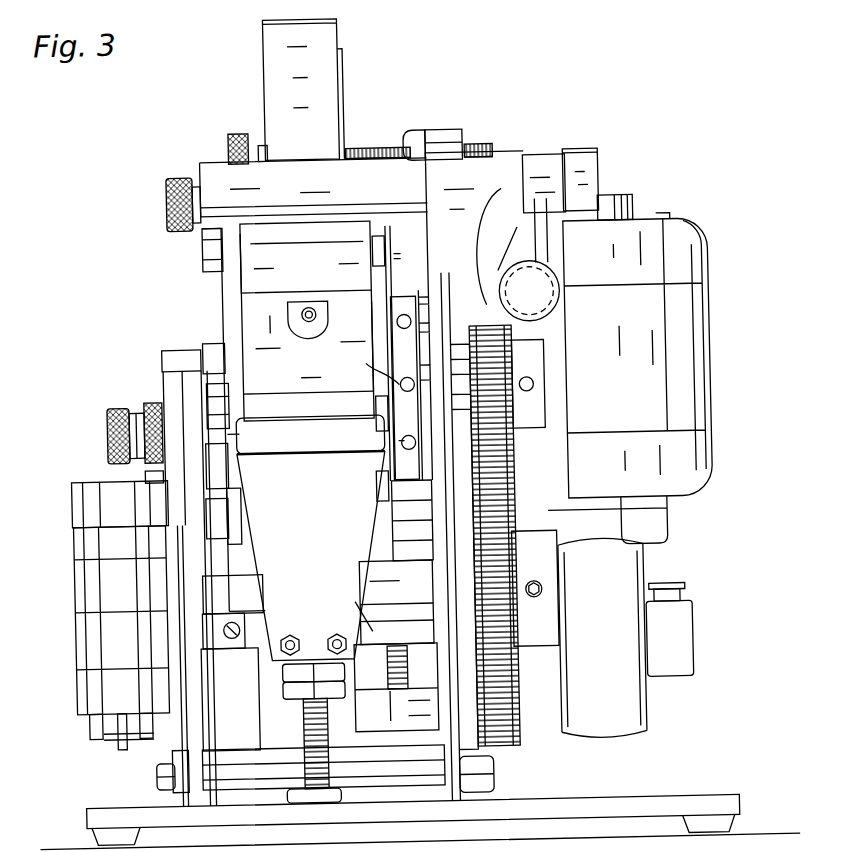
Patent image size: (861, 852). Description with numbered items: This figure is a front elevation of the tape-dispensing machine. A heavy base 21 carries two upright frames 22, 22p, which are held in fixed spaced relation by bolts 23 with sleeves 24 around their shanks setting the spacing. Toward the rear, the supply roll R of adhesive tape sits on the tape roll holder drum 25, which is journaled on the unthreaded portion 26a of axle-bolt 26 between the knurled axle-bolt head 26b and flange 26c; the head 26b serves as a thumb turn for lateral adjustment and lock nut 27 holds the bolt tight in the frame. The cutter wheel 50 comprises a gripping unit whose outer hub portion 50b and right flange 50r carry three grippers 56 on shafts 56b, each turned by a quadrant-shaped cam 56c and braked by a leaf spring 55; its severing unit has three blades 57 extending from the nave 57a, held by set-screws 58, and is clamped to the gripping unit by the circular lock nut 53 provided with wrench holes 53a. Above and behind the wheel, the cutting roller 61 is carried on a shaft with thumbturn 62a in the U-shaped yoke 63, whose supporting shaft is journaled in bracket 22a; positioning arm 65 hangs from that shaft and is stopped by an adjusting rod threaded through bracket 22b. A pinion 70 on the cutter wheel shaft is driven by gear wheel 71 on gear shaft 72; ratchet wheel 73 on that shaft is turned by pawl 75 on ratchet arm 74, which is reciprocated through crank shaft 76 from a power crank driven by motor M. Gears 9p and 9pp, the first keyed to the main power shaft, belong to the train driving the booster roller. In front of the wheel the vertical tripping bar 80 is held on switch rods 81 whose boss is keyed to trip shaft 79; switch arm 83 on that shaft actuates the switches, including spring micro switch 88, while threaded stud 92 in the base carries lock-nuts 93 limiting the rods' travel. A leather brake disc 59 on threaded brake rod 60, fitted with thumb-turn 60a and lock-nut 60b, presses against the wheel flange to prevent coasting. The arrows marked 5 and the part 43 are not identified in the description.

The supply roll R is at (273, 38).
The tape roll holder drum 25 is at (354, 62).
The section line 5 is at (337, 112).
The unthreaded portion of axle-bolt 26a is at (268, 156).
The flange 26c is at (360, 143).
The lock nut 27 is at (435, 130).
The axle-bolt 26 is at (488, 146).
The bracket 22a is at (587, 156).
The U-shaped yoke 63 is at (228, 167).
The cutting roller 61 is at (281, 213).
The thumbturn 62a is at (172, 198).
The axle-bolt head 26b is at (240, 130).
The cutter wheel 50 is at (225, 319).
The outer or sleeve portion of the hub 50b is at (226, 294).
The right flange 50r is at (388, 339).
The set-screws 58 is at (312, 305).
The nave 57a is at (273, 308).
The blades 57 is at (317, 226).
The shaft 56b is at (396, 245).
The quadrant shaped cam 56c is at (212, 249).
The stop 43 is at (221, 372).
The circular lock nut 53 is at (422, 312).
The radially extending holes 53a is at (375, 365).
The leaf springs 55 is at (403, 255).
The positioning arm 65 is at (564, 253).
The bracket 22b is at (563, 304).
The pinion 70 is at (514, 348).
The gear wheel 71 is at (508, 730).
The worm gear reduction motor M is at (687, 351).
The upright frame 22 is at (449, 770).
The tripping bar 80 is at (286, 426).
The grippers 56 is at (330, 405).
The disc-shaped piece of leather 59 is at (220, 440).
The switch rods 81 is at (287, 637).
The lock-nuts 93 is at (285, 679).
The threaded stud 92 is at (300, 715).
The spring micro switch 88 is at (300, 735).
The gear g'' 9pp is at (398, 567).
The gear shaft 72 is at (380, 587).
The trip shaft 79 is at (363, 621).
The gear g' 9p is at (386, 671).
The switch arm 83 is at (228, 643).
The sleeves 24 is at (410, 771).
The base 21 is at (614, 810).
The ratchet wheel 73 is at (112, 549).
The bolts 23 is at (155, 469).
The upright frame 22p is at (190, 717).
The thumb-turn 60a is at (108, 417).
The threaded brake rod 60 is at (148, 412).
The lock-nut 60b is at (157, 394).
The crank shaft 76 is at (109, 489).
The ratchet arm 74 is at (88, 533).
The pawl 75 is at (108, 644).